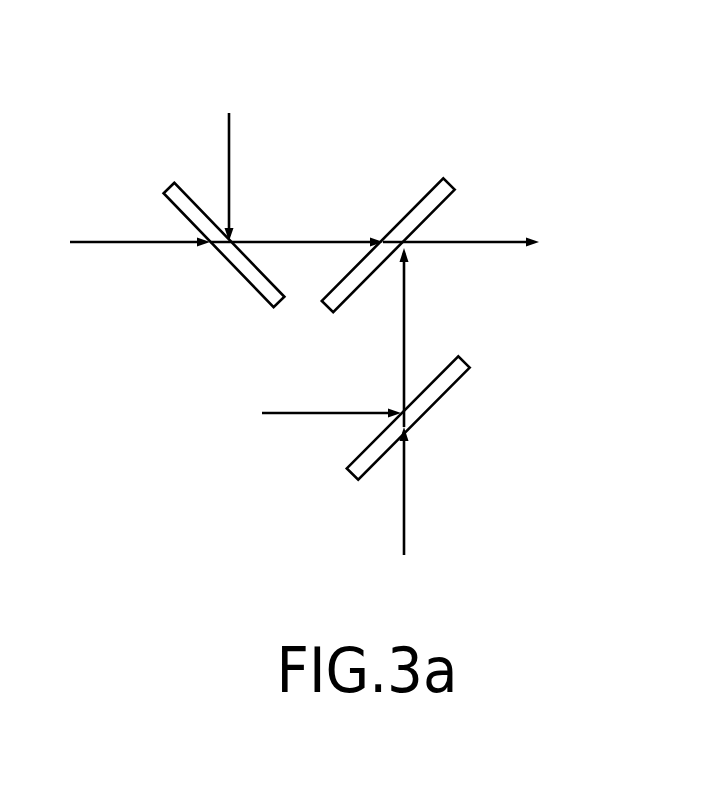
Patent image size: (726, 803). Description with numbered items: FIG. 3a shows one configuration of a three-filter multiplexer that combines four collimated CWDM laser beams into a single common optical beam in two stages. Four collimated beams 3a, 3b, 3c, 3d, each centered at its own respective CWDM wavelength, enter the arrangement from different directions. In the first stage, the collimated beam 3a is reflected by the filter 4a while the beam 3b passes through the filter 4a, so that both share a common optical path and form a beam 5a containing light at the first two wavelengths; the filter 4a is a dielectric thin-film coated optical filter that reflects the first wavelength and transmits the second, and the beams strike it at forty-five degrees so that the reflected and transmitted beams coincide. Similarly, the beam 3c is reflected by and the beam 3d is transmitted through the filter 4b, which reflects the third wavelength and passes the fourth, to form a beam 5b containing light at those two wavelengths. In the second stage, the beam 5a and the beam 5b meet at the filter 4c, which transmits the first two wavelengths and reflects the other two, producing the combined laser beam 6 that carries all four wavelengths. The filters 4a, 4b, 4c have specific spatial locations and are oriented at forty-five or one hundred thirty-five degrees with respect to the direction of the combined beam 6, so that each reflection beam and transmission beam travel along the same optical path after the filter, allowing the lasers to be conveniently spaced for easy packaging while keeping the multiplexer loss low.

The collimated beam 3a is at (228, 145).
The collimated beam 3b is at (128, 242).
The collimated beam 3c is at (300, 413).
The collimated beam 3d is at (404, 537).
The filter 4a is at (254, 286).
The filter 4b is at (455, 383).
The filter 4c is at (427, 187).
The beam 5a is at (328, 240).
The beam 5b is at (405, 303).
The combined laser beam 6 is at (482, 240).